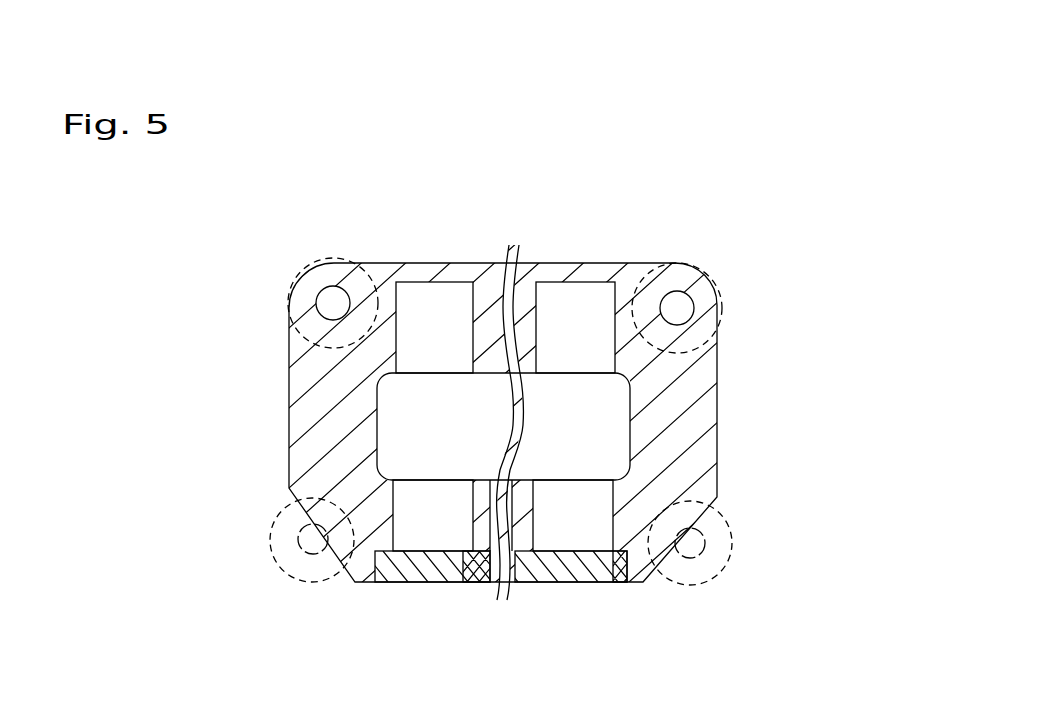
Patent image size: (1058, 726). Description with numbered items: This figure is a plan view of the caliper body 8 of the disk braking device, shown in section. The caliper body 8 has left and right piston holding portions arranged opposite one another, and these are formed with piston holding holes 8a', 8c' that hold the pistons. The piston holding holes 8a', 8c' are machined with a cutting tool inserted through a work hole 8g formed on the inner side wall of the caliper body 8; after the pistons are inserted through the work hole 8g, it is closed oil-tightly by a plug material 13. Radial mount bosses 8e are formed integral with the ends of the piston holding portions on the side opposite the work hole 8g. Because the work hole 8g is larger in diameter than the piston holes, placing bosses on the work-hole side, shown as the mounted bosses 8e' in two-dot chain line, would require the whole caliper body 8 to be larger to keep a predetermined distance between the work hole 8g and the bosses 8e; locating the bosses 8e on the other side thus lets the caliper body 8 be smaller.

The caliper body 8 is at (713, 250).
The piston holding hole 8a' is at (390, 428).
The piston holding hole 8c' is at (636, 422).
The radial mount boss 8e is at (493, 338).
The mounted boss 8e' is at (512, 564).
The work hole 8g is at (460, 583).
The plug material 13 is at (410, 583).